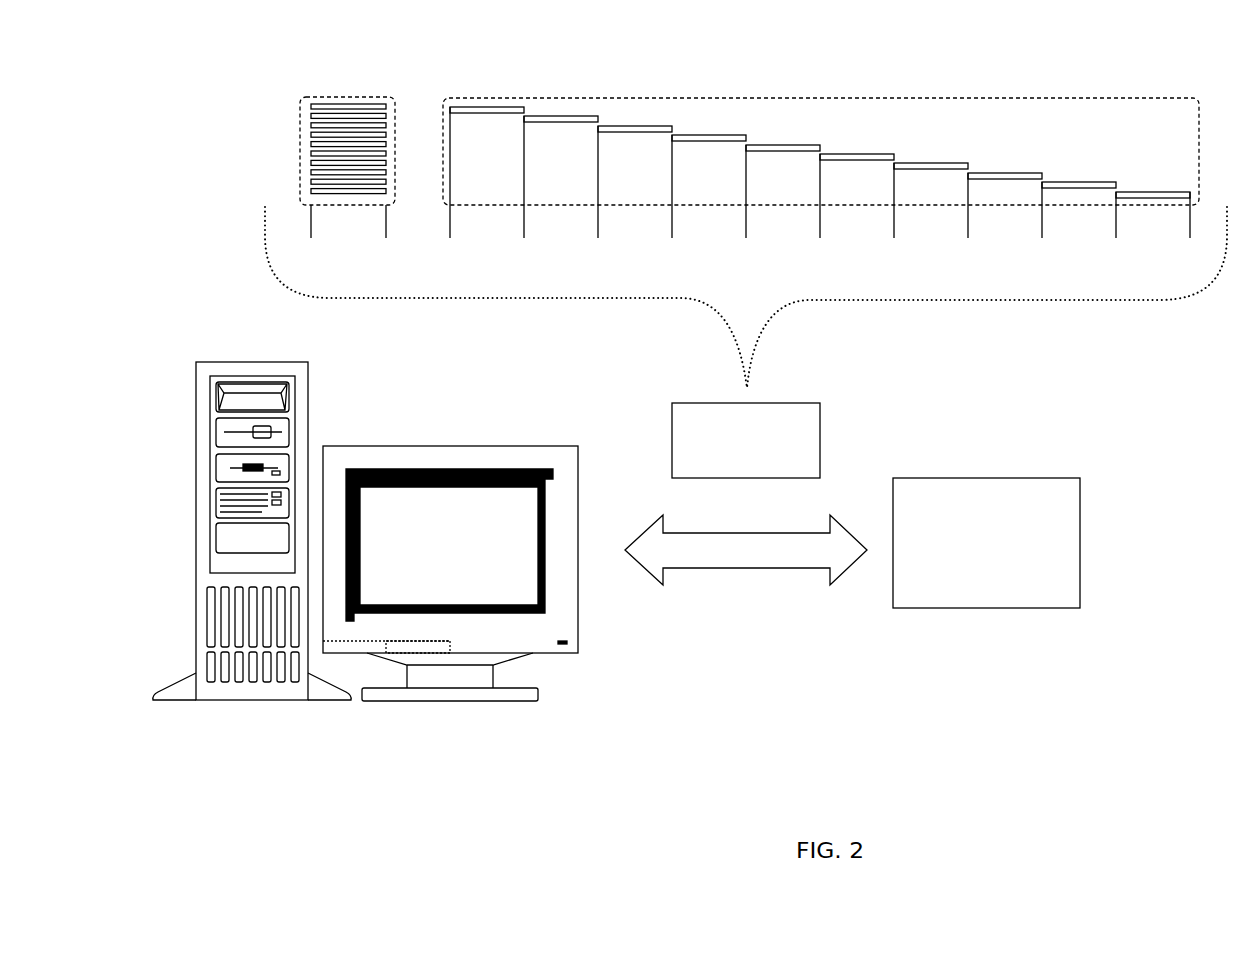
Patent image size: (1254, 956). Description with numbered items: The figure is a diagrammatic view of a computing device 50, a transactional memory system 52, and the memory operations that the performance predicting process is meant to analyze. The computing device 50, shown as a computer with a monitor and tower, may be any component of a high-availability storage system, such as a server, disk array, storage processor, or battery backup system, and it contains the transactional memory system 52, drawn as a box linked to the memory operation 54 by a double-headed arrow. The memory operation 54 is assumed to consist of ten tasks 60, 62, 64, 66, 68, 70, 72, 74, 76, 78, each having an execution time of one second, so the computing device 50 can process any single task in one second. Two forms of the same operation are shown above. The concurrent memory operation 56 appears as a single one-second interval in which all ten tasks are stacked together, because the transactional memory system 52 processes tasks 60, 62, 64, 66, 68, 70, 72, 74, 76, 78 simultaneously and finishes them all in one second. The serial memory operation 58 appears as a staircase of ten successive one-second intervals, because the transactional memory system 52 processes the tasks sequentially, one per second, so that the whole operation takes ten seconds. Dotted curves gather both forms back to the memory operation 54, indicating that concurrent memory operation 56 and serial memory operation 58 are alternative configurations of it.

The computing device 50 is at (308, 404).
The transactional memory system 52 is at (1080, 498).
The memory operation 54 is at (820, 422).
The concurrent memory operation 56 is at (395, 116).
The serial memory operation 58 is at (1199, 108).
The task 60 is at (524, 107).
The task 62 is at (598, 116).
The task 64 is at (672, 126).
The task 66 is at (746, 135).
The task 68 is at (820, 145).
The task 70 is at (894, 154).
The task 72 is at (968, 163).
The task 74 is at (1042, 173).
The task 76 is at (1116, 182).
The task 78 is at (1190, 192).